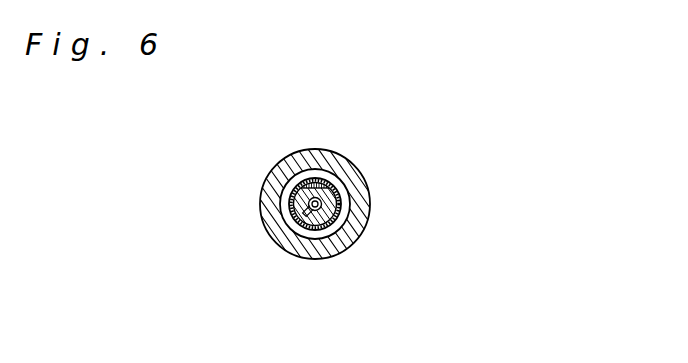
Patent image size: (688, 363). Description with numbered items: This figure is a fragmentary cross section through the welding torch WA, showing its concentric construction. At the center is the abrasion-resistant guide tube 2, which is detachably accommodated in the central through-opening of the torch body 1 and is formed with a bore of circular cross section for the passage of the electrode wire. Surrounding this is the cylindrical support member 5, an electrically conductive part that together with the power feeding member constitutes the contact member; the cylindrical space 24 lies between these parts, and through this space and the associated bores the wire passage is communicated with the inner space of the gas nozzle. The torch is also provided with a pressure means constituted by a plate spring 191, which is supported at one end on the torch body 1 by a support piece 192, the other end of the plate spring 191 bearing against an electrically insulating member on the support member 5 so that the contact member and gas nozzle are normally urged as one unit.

The torch body 1 is at (296, 206).
The abrasion-resistant guide tube 2 is at (290, 227).
The support member 5 is at (353, 197).
The cylindrical space 24 is at (333, 235).
The plate spring 191 is at (310, 183).
The support piece 192 is at (310, 230).
The welding torch WA is at (450, 227).